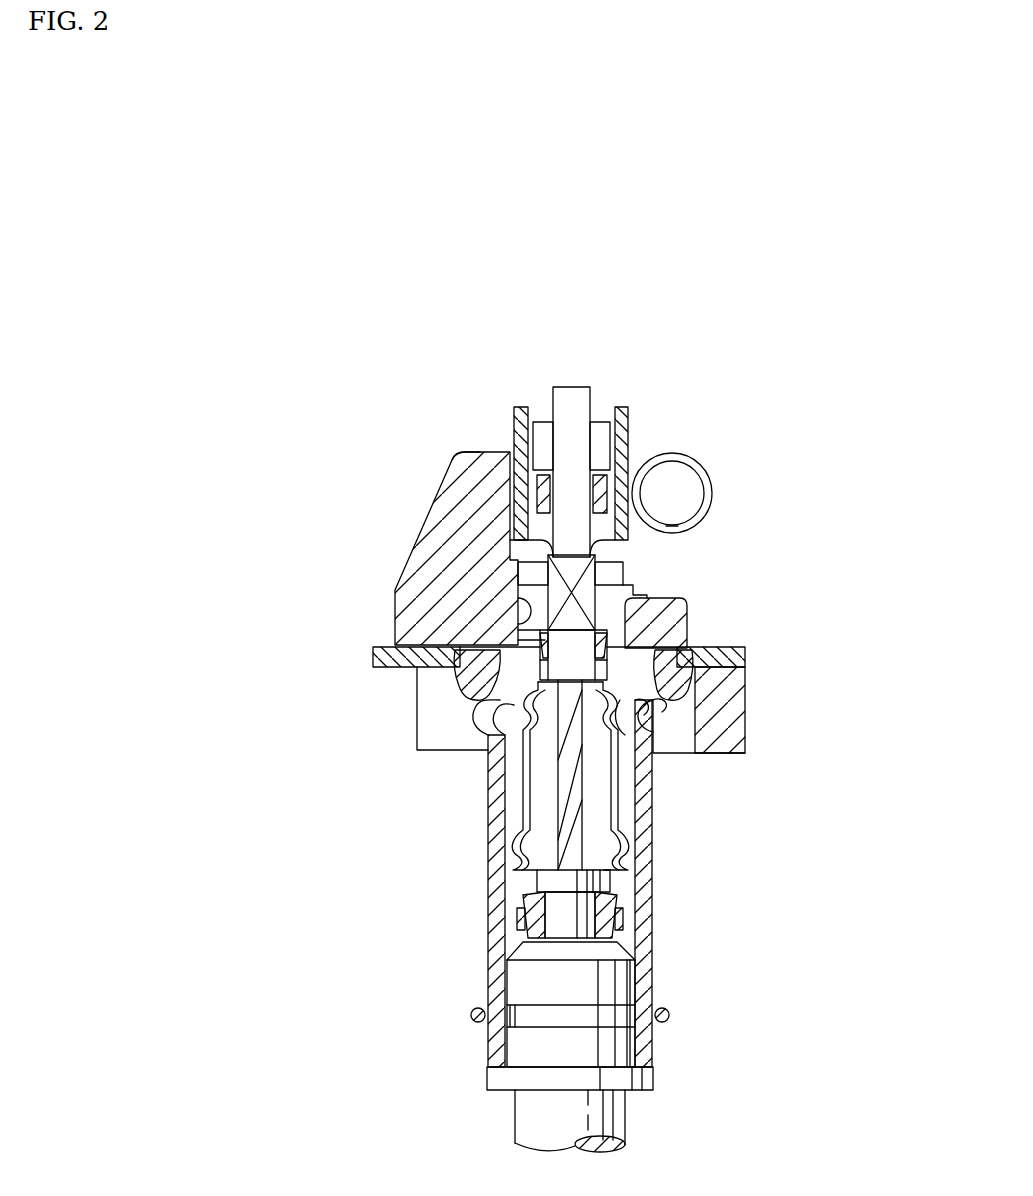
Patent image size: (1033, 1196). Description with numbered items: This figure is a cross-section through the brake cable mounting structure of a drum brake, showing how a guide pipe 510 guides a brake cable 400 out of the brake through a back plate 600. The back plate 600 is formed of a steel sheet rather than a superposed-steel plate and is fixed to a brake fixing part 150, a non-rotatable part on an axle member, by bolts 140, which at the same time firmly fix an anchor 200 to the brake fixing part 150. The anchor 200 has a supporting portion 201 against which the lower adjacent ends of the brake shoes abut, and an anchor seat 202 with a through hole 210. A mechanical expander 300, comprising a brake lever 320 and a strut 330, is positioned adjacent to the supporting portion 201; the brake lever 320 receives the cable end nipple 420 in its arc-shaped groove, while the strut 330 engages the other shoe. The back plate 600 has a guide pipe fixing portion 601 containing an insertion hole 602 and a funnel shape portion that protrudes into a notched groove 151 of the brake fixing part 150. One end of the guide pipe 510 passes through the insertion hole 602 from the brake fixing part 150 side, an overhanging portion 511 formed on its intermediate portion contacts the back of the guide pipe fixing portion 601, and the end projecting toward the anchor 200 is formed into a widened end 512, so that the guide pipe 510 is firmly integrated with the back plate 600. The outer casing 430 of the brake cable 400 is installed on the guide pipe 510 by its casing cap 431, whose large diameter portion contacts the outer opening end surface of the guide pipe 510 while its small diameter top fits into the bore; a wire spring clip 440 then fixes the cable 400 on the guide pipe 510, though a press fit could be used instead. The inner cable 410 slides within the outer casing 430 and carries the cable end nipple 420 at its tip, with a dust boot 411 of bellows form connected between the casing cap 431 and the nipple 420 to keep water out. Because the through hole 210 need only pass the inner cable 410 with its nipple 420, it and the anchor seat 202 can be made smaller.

The bolt 140 is at (637, 576).
The brake fixing part 150 is at (743, 762).
The notched groove 151 is at (690, 757).
The anchor 200 is at (418, 495).
The supporting portion 201 is at (456, 453).
The anchor seat 202 is at (690, 625).
The through hole 210 is at (520, 625).
The mechanical expander 300 is at (519, 395).
The brake lever 320 is at (605, 488).
The strut 330 is at (625, 407).
The brake cable 400 is at (640, 1123).
The inner cable 410 is at (556, 780).
The dust boot 411 is at (528, 828).
The cable end nipple 420 is at (575, 387).
The outer casing 430 is at (538, 1126).
The casing cap 431 is at (522, 1050).
The wire spring clip 440 is at (672, 1020).
The guide pipe 510 is at (666, 977).
The overhanging portion 511 is at (484, 722).
The widened end 512 is at (470, 673).
The back plate 600 is at (756, 657).
The guide pipe fixing portion 601 is at (708, 717).
The insertion hole 602 is at (668, 735).